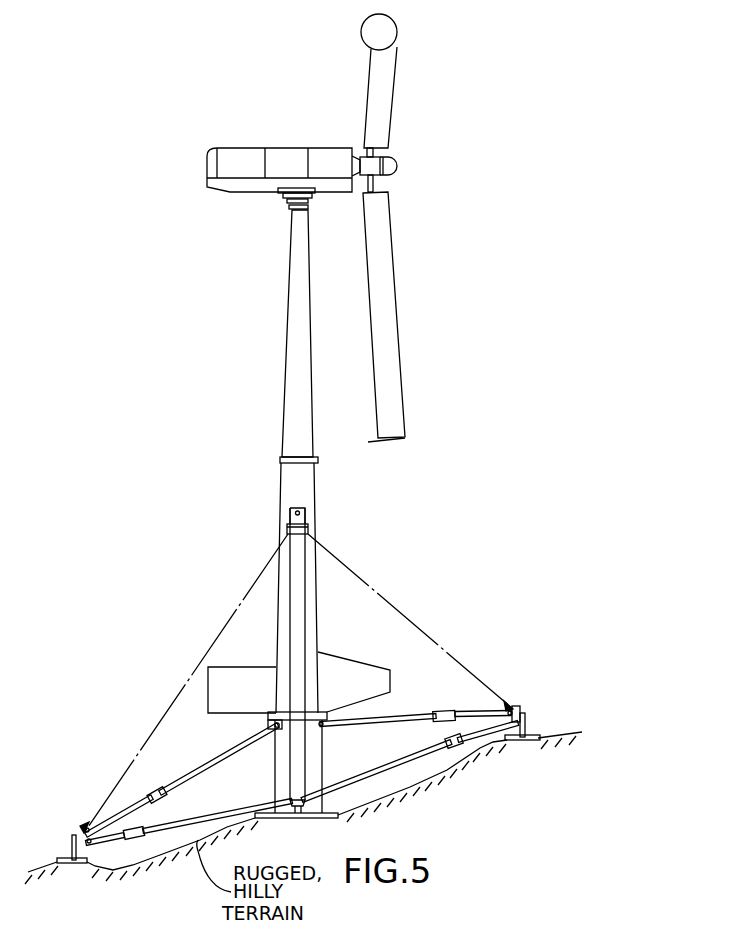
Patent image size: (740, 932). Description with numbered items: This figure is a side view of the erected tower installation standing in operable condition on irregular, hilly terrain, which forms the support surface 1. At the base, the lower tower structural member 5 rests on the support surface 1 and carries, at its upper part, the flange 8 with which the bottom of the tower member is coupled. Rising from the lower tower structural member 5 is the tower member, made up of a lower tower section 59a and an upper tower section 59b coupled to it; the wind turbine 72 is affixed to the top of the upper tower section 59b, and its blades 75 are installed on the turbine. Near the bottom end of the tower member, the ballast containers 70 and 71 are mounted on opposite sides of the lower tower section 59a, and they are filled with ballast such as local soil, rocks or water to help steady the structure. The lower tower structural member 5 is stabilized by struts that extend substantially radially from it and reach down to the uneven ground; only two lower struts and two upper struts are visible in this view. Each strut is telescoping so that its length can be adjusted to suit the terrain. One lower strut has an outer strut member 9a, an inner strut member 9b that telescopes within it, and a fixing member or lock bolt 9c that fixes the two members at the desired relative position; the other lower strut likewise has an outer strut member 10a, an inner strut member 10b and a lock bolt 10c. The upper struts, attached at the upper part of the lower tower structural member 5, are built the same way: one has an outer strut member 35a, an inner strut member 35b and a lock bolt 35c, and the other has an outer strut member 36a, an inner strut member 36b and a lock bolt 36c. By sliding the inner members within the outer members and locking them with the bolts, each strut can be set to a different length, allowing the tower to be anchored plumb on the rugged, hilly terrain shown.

The support surface 1 is at (549, 730).
The lower tower structural member 5 is at (324, 761).
The flange 8 is at (362, 711).
The outer strut member 9a is at (205, 821).
The inner strut member 9b is at (117, 840).
The fixing member or lock bolt 9c is at (146, 838).
The outer strut member 10a is at (392, 768).
The inner strut member 10b is at (488, 745).
The fixing member or lock bolt 10c is at (452, 748).
The outer strut member 35a is at (212, 762).
The inner strut member 35b is at (132, 800).
The fixing member or lock bolt 35c is at (179, 781).
The outer strut member 36a is at (343, 727).
The inner strut member 36b is at (495, 712).
The fixing member or lock bolt 36c is at (438, 712).
The lower tower section 59a is at (276, 642).
The upper tower section 59b is at (282, 391).
The ballast container 70 is at (258, 667).
The ballast container 71 is at (342, 653).
The wind turbine 72 is at (284, 148).
The blades 75 is at (398, 78).